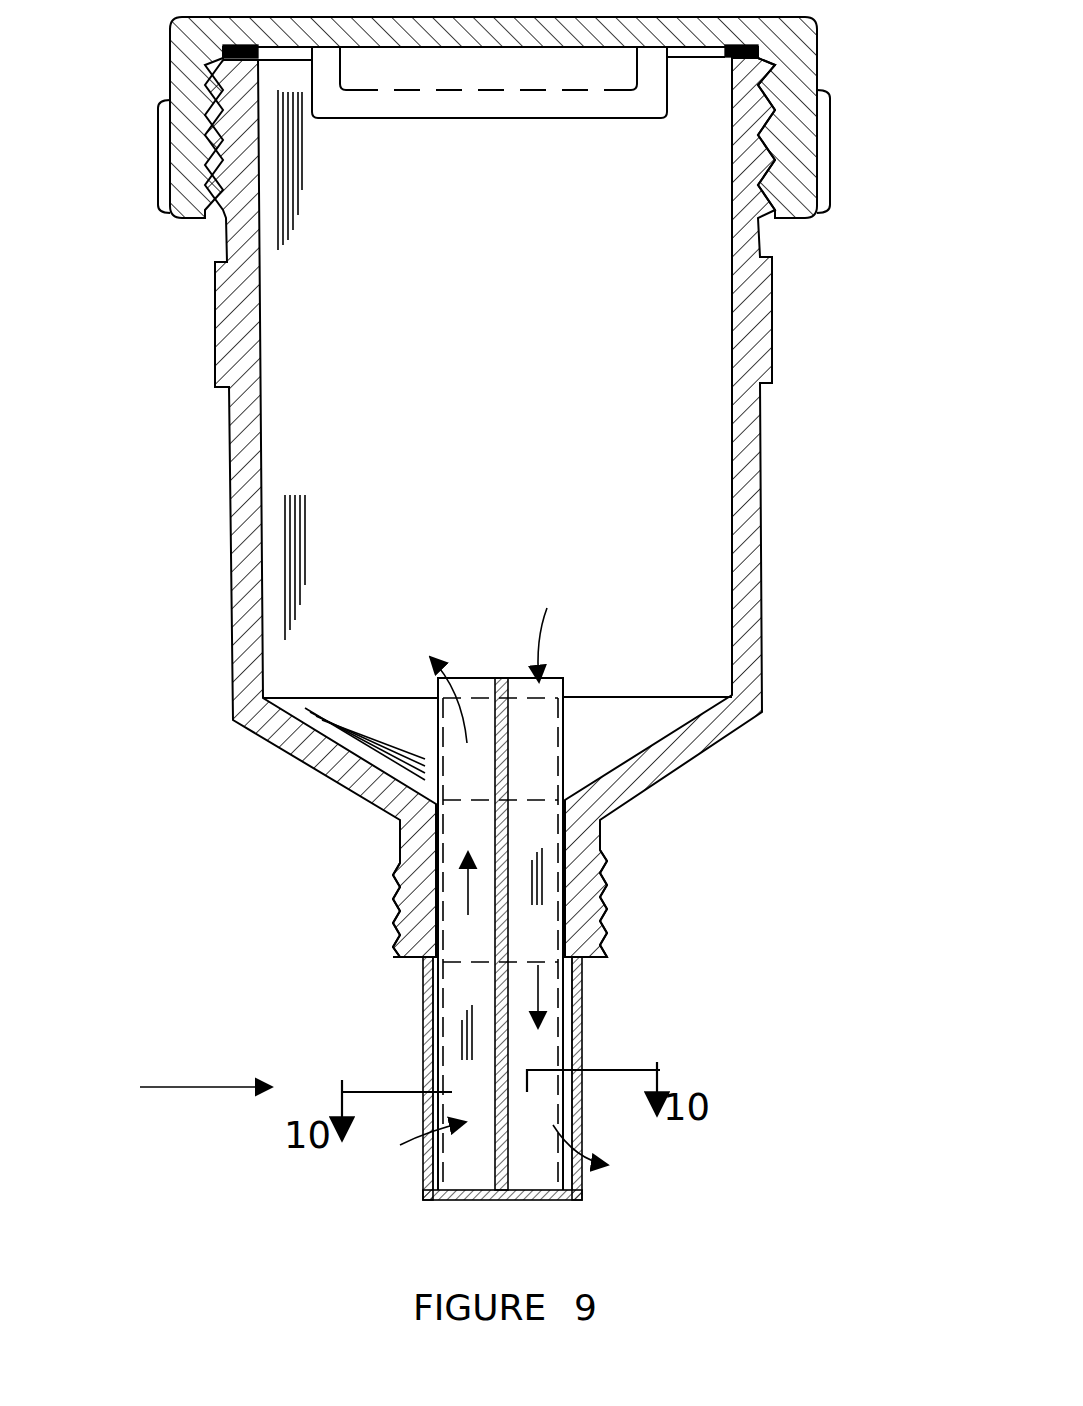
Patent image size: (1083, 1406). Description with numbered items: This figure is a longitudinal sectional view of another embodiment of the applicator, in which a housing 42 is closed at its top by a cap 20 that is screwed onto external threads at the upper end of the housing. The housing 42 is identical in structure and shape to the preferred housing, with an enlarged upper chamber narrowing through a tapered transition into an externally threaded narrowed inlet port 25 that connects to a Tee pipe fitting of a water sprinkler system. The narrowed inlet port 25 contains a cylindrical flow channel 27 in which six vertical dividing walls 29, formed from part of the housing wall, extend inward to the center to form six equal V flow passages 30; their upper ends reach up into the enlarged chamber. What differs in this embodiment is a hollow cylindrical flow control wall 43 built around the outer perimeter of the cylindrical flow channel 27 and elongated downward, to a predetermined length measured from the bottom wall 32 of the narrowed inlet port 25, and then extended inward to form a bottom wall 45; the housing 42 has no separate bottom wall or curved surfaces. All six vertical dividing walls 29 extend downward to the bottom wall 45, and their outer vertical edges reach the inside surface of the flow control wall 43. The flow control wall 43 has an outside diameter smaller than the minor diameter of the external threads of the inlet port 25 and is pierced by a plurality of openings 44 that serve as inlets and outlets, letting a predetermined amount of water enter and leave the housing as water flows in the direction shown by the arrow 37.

The cap 20 is at (822, 68).
The housing 42 is at (790, 413).
The vertical dividing walls 29 is at (440, 678).
The cylindrical flow channel 27 is at (400, 858).
The narrowed inlet port 25 is at (603, 862).
The V flow passages 30 is at (453, 908).
The bottom wall of the narrowed inlet port 32 is at (420, 970).
The openings 44 is at (580, 990).
The hollow cylindrical flow control wall 43 is at (580, 1035).
The bottom wall of the hollow cylindrical flow control wall 45 is at (462, 1202).
The arrow 37 is at (190, 1086).